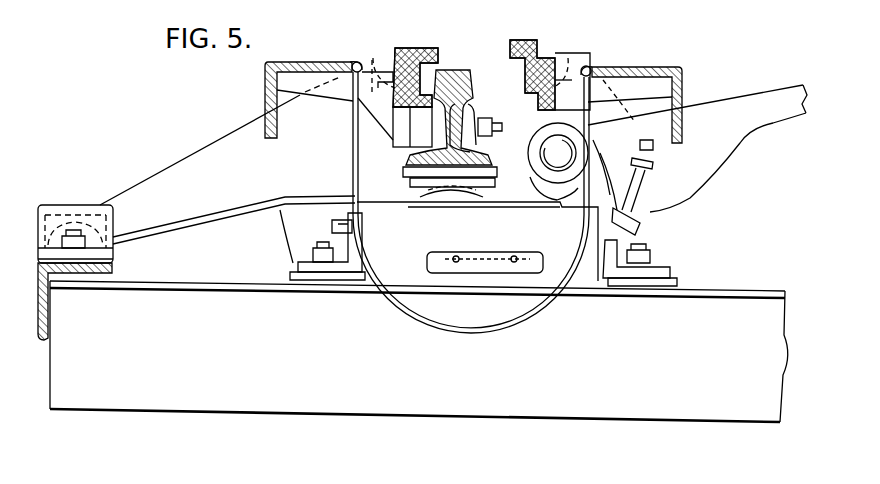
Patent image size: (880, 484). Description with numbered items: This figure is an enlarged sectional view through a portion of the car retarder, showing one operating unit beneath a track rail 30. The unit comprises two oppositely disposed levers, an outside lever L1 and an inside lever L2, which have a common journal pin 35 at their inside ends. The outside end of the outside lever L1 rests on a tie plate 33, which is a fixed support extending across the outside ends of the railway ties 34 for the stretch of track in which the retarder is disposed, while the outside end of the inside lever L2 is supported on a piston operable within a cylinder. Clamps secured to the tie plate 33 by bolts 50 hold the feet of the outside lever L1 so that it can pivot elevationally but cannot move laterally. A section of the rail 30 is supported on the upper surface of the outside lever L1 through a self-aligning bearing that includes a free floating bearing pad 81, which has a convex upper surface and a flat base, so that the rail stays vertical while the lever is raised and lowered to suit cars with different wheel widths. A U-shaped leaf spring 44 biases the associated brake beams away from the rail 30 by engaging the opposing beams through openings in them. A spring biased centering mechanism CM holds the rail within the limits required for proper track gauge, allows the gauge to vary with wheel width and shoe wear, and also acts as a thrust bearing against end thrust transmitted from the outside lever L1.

The track rail 30 is at (457, 70).
The tie plate 33 is at (42, 337).
The railway ties 34 is at (595, 408).
The common journal pin 35 is at (556, 150).
The U-shaped leaf springs 44 is at (533, 303).
The bolts 50 is at (108, 242).
The free floating bearing pad 81 is at (425, 194).
The outside lever L1 is at (172, 170).
The inside lever L2 is at (735, 103).
The spring biased centering mechanism CM is at (478, 244).